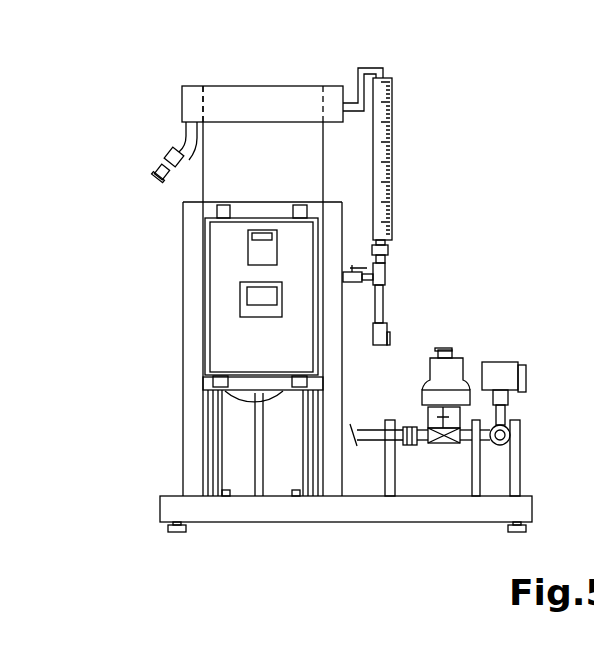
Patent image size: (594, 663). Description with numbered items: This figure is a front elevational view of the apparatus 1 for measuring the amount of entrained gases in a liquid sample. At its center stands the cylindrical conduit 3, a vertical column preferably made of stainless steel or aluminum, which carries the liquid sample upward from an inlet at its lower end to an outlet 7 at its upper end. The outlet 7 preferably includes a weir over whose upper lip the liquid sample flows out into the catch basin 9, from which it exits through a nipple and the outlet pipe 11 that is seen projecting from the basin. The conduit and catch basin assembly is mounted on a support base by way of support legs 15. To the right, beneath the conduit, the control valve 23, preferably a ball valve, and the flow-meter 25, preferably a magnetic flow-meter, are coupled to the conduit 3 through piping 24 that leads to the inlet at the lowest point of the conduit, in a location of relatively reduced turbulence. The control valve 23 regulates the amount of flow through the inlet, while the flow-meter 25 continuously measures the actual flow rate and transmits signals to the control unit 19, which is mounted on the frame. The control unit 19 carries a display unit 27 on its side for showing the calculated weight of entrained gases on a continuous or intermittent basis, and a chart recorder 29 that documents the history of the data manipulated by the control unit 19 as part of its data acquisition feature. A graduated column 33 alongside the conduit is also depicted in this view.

The apparatus 1 is at (138, 543).
The cylindrical conduit 3 is at (197, 187).
The outlet 7 is at (204, 86).
The catch basin 9 is at (187, 108).
The outlet pipe 11 is at (180, 138).
The support legs 15 is at (207, 445).
The control unit 19 is at (222, 350).
The control valve 23 is at (450, 370).
The piping 24 is at (380, 447).
The flow-meter 25 is at (503, 370).
The display unit 27 is at (252, 260).
The chart recorder 29 is at (245, 303).
The graduated gauge tube 33 is at (392, 158).